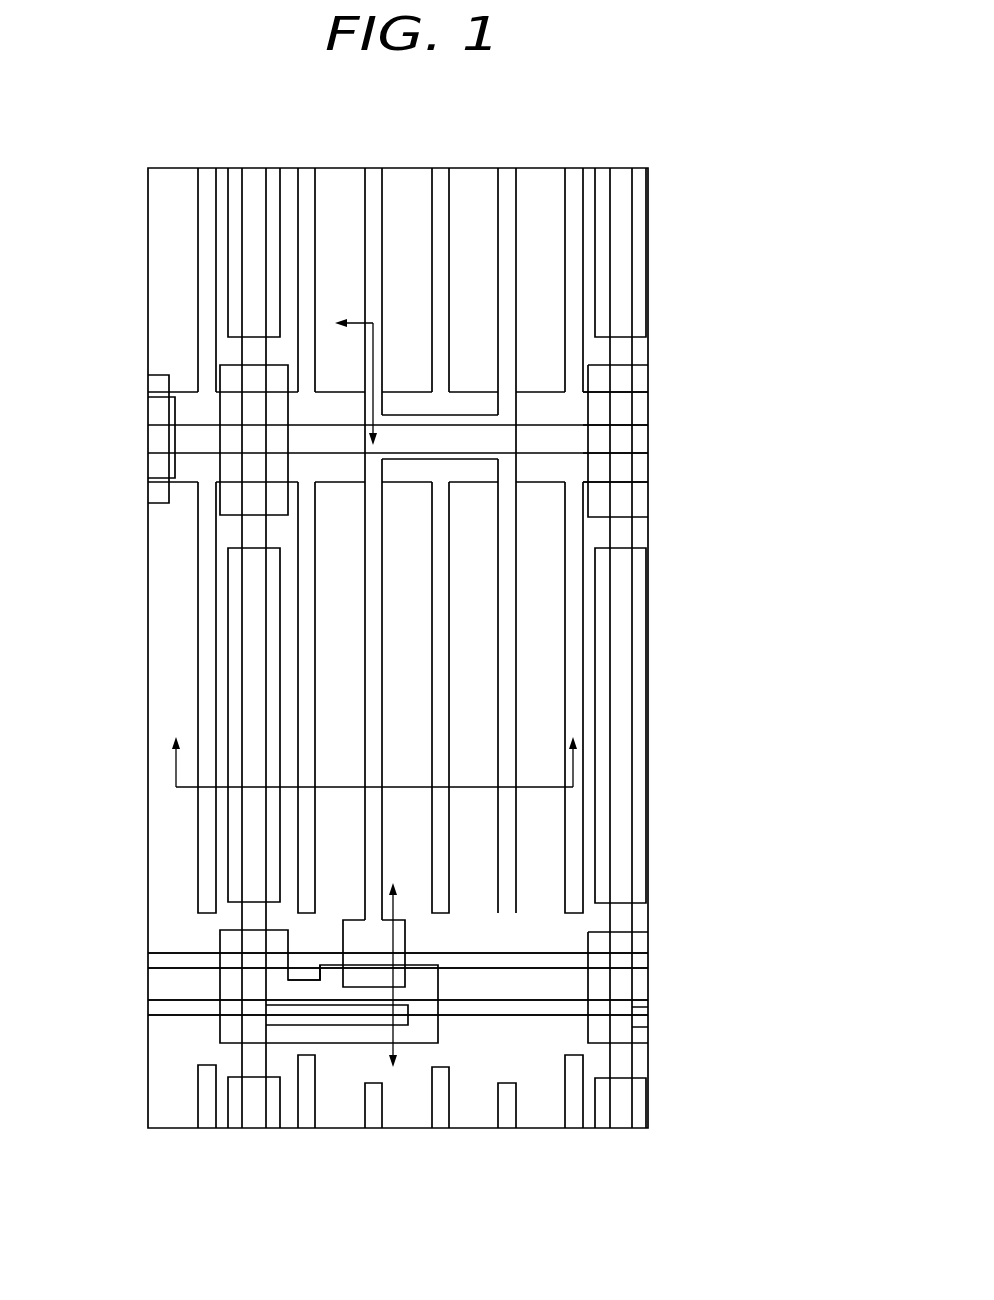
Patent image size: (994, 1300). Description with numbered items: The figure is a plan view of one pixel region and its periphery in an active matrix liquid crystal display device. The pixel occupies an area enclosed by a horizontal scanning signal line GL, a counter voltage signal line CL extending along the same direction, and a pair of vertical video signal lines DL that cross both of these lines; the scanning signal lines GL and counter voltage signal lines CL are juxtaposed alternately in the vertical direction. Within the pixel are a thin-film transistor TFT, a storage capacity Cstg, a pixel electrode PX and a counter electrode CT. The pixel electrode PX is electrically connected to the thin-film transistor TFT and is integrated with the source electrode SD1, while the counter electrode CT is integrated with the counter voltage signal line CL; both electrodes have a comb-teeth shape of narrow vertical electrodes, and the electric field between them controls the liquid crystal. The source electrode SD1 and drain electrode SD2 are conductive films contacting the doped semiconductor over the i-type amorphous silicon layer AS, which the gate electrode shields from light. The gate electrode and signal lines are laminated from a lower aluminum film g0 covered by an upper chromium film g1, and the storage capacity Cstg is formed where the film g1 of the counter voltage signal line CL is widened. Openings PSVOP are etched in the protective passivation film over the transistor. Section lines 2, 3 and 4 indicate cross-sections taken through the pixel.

The video signal line DL is at (264, 168).
The counter electrode CT is at (566, 178).
The pixel electrode PX is at (498, 688).
The storage capacity Cstg is at (445, 432).
The counter voltage signal line CL is at (713, 408).
The conductive film g1 is at (640, 480).
The conductive film g0 is at (640, 453).
The scanning signal line GL is at (713, 950).
The i-type semiconductor layer AS is at (220, 443).
The opening PSVOP is at (228, 583).
The source electrode SD1 is at (400, 937).
The drain electrode SD2 is at (350, 1027).
The thin-film transistor TFT is at (365, 990).
The section line 2- 2 is at (374, 749).
The section line 3- 3 is at (393, 980).
The section line 4- 4 is at (358, 378).